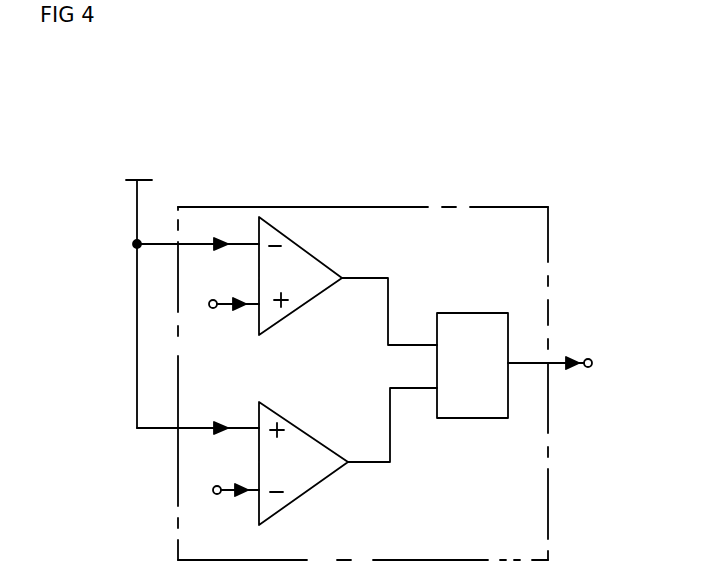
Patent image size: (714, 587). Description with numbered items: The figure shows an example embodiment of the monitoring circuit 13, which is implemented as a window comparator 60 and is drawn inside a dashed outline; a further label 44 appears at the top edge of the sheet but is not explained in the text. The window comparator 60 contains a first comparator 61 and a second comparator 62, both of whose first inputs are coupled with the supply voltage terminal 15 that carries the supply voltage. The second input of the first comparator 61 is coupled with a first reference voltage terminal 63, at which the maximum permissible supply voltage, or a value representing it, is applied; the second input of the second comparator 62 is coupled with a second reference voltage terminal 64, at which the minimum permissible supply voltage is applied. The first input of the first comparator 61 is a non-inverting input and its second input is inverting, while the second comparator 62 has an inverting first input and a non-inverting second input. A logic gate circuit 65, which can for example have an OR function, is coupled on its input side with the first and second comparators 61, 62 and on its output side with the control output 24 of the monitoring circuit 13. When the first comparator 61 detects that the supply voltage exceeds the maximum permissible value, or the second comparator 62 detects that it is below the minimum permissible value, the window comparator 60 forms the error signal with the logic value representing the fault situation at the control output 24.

The monitoring circuit 13 is at (548, 183).
The supply voltage terminal 15 is at (133, 181).
The control output 24 is at (592, 368).
The reference marker 44 is at (533, 0).
The window comparator 60 is at (507, 199).
The first comparator 61 is at (300, 431).
The second comparator 62 is at (321, 226).
The first reference voltage terminal 63 is at (216, 495).
The second reference voltage terminal 64 is at (213, 300).
The logic gate circuit 65 is at (472, 311).